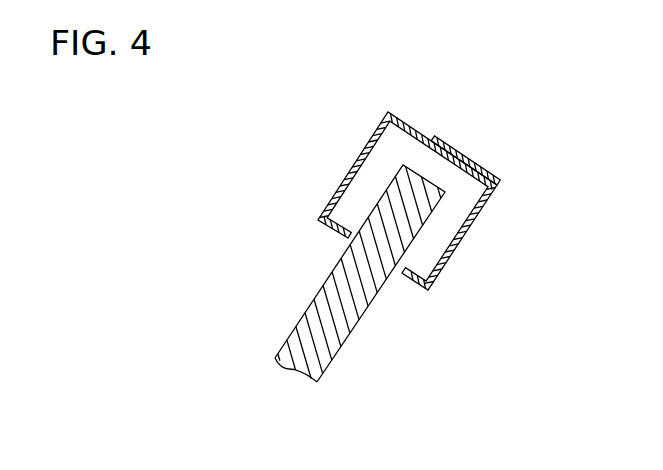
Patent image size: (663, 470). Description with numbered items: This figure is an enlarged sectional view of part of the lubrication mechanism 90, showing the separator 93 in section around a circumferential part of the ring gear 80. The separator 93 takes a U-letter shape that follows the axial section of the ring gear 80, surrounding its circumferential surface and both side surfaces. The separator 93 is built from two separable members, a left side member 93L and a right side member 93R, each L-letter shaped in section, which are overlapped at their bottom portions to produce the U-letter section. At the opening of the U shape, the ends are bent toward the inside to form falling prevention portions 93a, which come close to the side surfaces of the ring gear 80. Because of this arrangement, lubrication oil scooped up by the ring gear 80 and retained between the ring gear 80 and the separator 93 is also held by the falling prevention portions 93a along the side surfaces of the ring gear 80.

The lubrication mechanism 90 is at (524, 111).
The separator 93 is at (449, 108).
The left side member 93L is at (337, 192).
The right side member 93R is at (470, 233).
The falling prevention portions 93a is at (330, 233).
The ring gear 80 is at (335, 358).